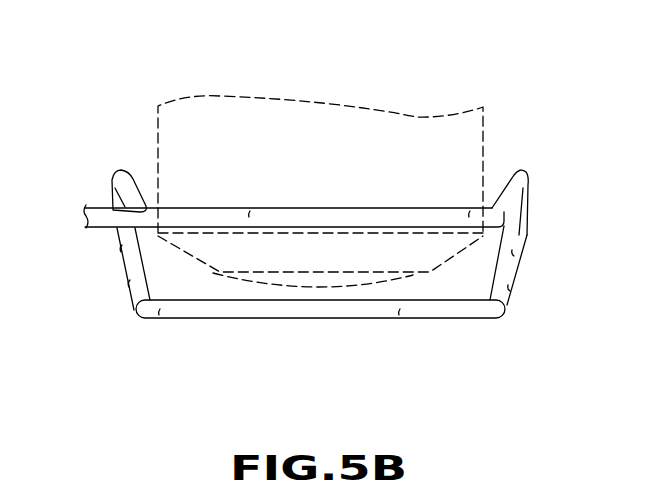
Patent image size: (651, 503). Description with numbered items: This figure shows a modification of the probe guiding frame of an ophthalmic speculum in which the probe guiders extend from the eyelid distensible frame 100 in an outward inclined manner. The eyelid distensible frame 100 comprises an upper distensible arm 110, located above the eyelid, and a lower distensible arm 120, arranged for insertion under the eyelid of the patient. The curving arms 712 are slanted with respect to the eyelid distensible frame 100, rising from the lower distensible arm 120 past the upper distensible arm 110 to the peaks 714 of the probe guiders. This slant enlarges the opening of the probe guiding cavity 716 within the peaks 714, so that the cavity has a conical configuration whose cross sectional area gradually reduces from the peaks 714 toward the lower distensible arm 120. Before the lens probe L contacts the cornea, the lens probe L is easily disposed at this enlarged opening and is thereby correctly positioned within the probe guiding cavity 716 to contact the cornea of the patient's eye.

The eyelid distensible frame 100 is at (294, 318).
The upper distensible arm 110 is at (197, 215).
The lower distensible arm 120 is at (223, 308).
The curving arm 712 is at (132, 265).
The peak 714 is at (113, 170).
The probe guiding cavity 716 is at (447, 278).
The lens probe L is at (322, 132).